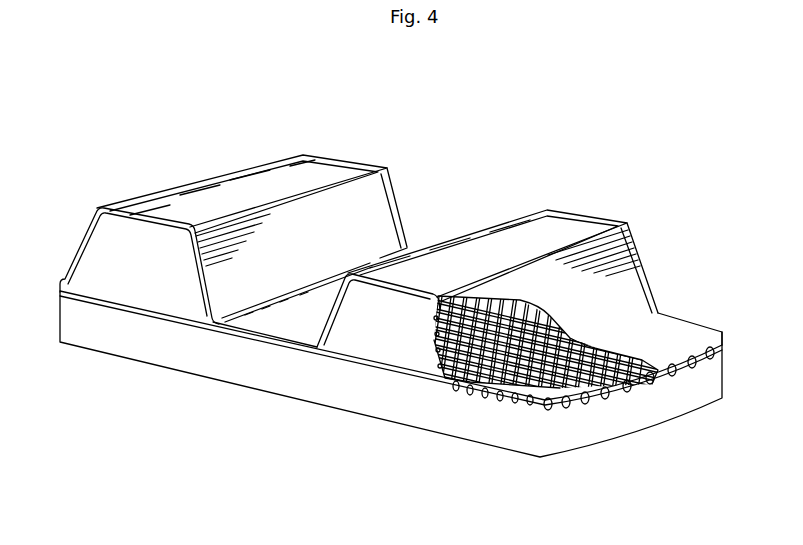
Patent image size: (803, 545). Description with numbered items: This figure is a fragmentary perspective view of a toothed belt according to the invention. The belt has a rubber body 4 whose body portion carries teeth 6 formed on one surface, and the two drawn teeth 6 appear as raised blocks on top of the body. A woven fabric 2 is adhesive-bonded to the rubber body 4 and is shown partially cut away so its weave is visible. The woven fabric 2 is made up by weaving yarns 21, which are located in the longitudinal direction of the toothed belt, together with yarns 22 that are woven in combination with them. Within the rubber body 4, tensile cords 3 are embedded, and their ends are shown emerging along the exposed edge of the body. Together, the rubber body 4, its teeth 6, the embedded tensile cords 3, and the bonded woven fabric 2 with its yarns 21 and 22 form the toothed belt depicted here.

The woven fabric 2 is at (663, 340).
The tensile cords 3 is at (583, 390).
The rubber body 4 is at (363, 340).
The teeth 6 is at (128, 222).
The yarns 21 is at (440, 368).
The yarns 22 is at (433, 340).